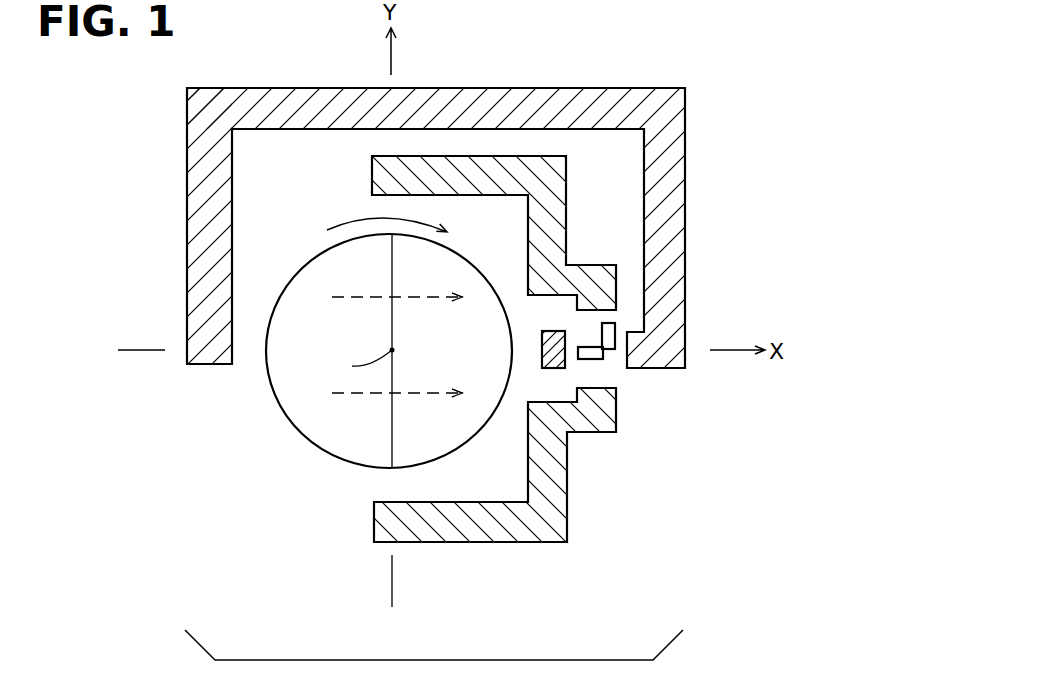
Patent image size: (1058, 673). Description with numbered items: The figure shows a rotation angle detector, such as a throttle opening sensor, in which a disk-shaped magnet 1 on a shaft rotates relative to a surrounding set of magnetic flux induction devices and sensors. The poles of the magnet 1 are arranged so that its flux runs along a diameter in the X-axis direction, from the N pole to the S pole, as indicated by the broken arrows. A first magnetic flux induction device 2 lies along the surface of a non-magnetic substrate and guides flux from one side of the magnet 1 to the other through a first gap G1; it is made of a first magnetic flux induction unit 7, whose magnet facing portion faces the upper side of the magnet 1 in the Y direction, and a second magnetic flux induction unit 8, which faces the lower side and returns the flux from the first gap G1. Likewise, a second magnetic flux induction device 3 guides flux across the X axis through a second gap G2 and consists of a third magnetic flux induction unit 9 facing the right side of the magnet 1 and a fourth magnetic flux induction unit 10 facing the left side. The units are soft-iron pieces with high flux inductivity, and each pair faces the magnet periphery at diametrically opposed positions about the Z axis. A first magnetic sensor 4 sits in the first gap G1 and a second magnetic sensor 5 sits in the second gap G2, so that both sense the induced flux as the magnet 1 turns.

The magnet 1 is at (313, 445).
The first magnetic flux induction device 2 is at (576, 155).
The second magnetic flux induction device 3 is at (695, 120).
The first magnetic sensor 4 is at (590, 362).
The second magnetic sensor 5 is at (613, 340).
The first magnetic flux induction unit 7 is at (483, 162).
The second magnetic flux induction unit 8 is at (485, 530).
The third magnetic flux induction unit 9 is at (554, 330).
The fourth magnetic flux induction unit 10 is at (685, 214).
The first gap G1 is at (622, 382).
The second gap G2 is at (628, 306).